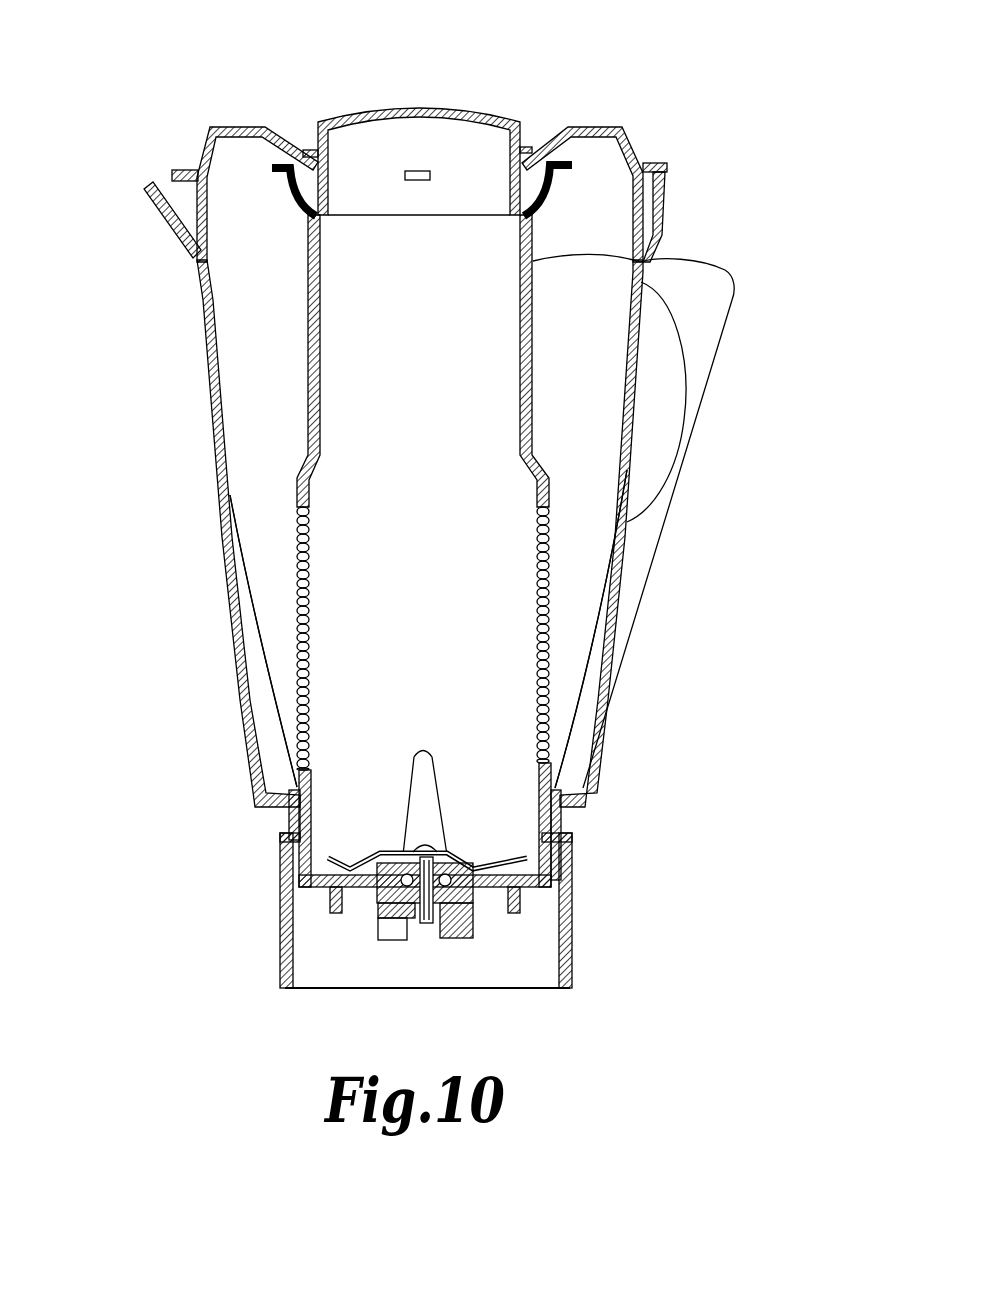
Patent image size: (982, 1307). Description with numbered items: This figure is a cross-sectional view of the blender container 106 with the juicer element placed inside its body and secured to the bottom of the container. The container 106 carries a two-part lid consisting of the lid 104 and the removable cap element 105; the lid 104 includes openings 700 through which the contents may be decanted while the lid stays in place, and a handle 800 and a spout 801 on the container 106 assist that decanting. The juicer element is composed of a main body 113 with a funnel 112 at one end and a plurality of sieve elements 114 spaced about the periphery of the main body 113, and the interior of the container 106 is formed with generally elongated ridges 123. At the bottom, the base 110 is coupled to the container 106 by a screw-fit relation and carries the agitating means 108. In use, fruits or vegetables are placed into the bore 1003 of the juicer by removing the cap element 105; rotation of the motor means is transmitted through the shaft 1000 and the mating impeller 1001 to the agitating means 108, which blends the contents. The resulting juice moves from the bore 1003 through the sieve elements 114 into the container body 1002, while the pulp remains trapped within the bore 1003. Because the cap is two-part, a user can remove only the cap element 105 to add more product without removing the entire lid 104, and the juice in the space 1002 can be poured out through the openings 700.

The lid 104 is at (213, 127).
The cap element 105 is at (396, 102).
The funnel 112 is at (556, 208).
The main body 113 is at (640, 267).
The openings 700 is at (197, 203).
The spout 801 is at (150, 213).
The handle 800 is at (707, 314).
The blender container 106 is at (223, 552).
The bore 1003 is at (472, 608).
The container body 1002 is at (280, 620).
The elongated ridges 123 is at (268, 655).
The sieve elements 114 is at (300, 702).
The agitating means 108 is at (430, 802).
The base 110 is at (572, 934).
The shaft 1000 is at (425, 925).
The mating impeller 1001 is at (458, 940).